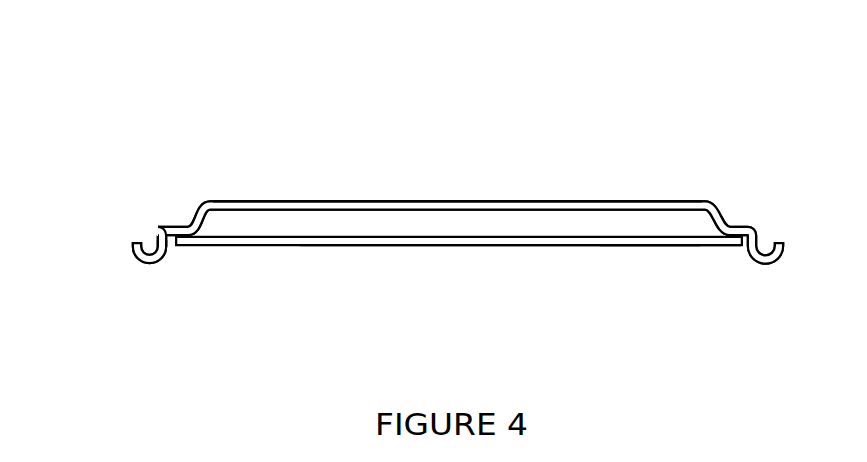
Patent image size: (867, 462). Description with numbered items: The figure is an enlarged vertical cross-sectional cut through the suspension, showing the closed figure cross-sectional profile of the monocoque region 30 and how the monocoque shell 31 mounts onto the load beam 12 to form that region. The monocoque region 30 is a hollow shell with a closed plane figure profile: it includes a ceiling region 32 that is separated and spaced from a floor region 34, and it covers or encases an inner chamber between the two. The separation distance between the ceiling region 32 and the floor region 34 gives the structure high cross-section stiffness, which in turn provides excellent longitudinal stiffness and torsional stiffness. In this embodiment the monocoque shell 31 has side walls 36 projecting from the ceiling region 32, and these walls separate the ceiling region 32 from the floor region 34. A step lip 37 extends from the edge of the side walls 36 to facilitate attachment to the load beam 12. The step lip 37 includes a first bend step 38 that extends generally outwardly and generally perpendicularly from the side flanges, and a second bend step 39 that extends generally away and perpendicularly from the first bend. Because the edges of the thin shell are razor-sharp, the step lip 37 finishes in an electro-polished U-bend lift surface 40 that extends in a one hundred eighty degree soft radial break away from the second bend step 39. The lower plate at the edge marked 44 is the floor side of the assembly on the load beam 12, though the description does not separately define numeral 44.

The load beam 12 is at (475, 267).
The monocoque region 30 is at (417, 118).
The monocoque shell 31 is at (475, 193).
The ceiling region 32 is at (320, 201).
The floor region 34 is at (341, 240).
The side walls 36 is at (723, 217).
The step lip 37 is at (758, 225).
The first bend step 38 is at (183, 229).
The second bend step 39 is at (156, 238).
The U-bend lift surface 40 is at (143, 263).
The edge of base plate 44 is at (627, 246).